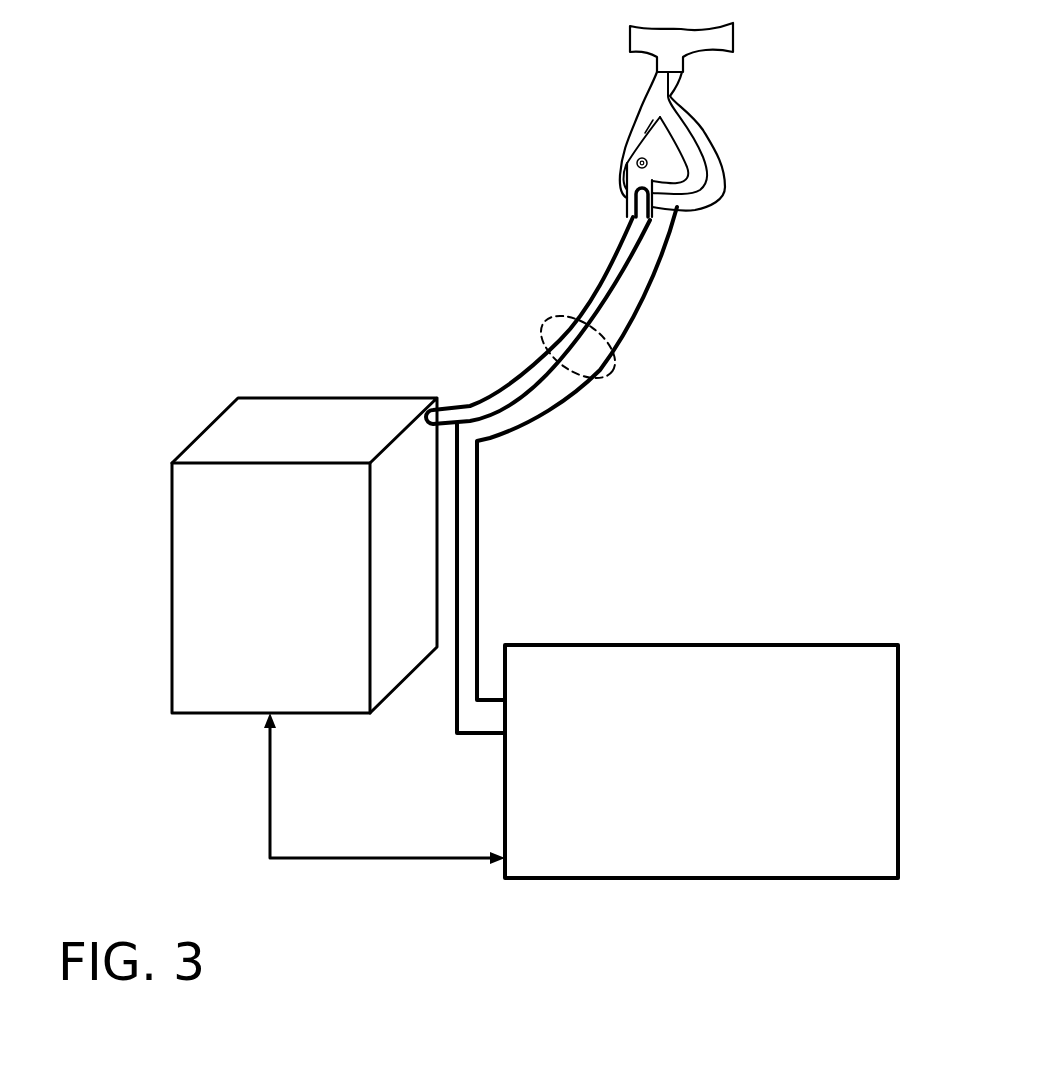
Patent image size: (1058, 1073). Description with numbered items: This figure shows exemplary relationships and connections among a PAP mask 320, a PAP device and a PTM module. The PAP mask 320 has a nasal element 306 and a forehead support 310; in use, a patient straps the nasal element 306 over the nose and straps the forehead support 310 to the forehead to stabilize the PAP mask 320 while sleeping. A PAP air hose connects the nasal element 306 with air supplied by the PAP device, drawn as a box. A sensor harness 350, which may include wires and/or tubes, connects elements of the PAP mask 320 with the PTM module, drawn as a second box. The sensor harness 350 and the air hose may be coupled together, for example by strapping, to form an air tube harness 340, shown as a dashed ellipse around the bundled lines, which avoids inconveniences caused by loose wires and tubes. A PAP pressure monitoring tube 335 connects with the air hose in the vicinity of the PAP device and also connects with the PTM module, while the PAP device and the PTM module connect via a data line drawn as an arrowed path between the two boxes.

The forehead support 310 is at (647, 53).
The PAP mask 320 is at (808, 62).
The nasal element 306 is at (637, 165).
The sensor harness 350 is at (478, 548).
The air tube harness 340 is at (616, 348).
The PAP pressure monitoring tube 335 is at (453, 728).